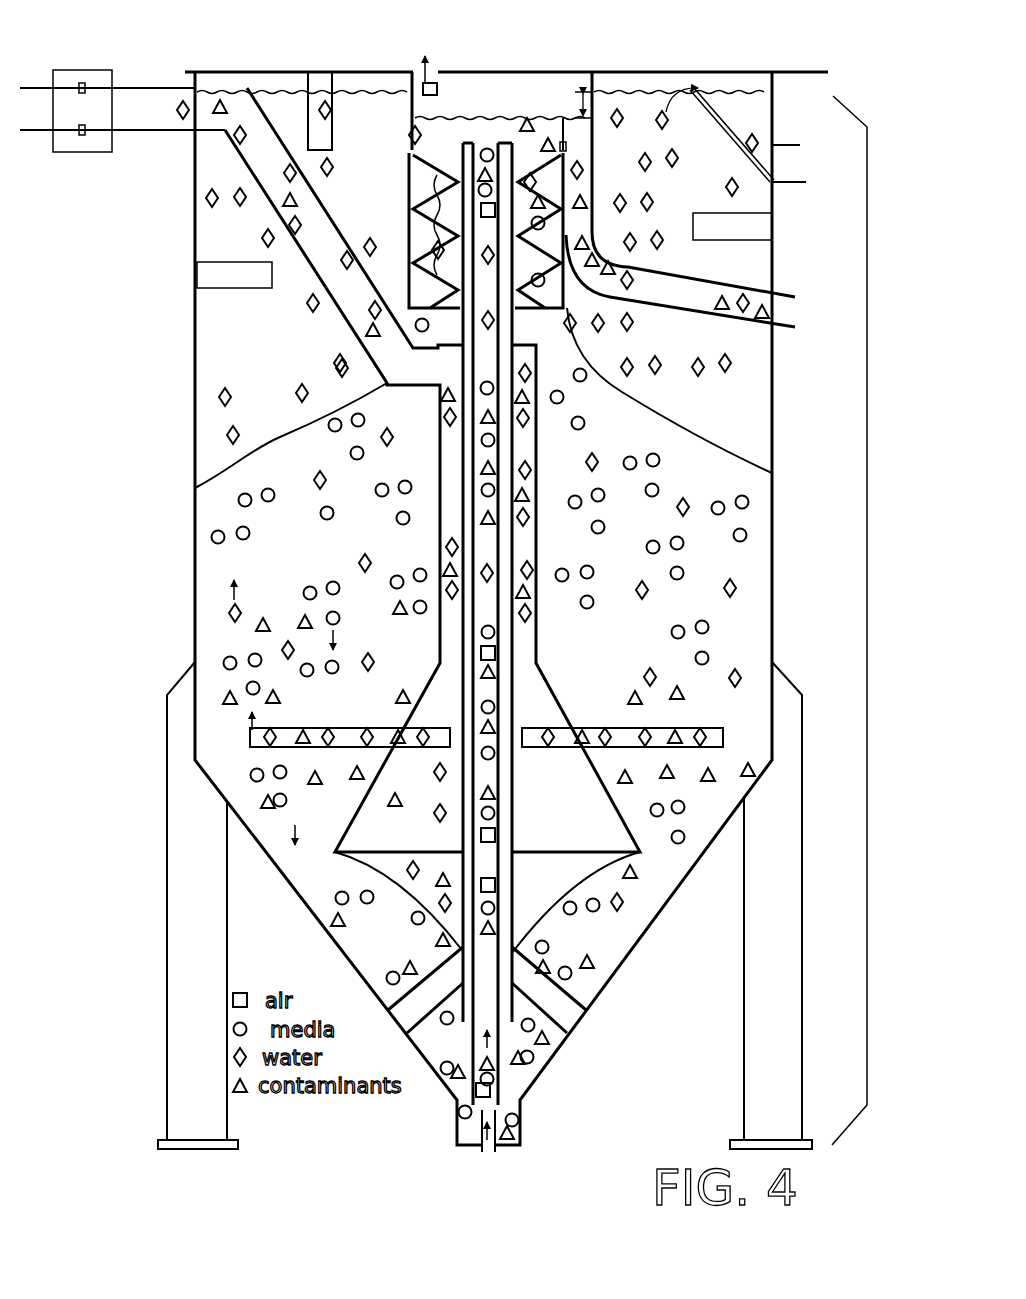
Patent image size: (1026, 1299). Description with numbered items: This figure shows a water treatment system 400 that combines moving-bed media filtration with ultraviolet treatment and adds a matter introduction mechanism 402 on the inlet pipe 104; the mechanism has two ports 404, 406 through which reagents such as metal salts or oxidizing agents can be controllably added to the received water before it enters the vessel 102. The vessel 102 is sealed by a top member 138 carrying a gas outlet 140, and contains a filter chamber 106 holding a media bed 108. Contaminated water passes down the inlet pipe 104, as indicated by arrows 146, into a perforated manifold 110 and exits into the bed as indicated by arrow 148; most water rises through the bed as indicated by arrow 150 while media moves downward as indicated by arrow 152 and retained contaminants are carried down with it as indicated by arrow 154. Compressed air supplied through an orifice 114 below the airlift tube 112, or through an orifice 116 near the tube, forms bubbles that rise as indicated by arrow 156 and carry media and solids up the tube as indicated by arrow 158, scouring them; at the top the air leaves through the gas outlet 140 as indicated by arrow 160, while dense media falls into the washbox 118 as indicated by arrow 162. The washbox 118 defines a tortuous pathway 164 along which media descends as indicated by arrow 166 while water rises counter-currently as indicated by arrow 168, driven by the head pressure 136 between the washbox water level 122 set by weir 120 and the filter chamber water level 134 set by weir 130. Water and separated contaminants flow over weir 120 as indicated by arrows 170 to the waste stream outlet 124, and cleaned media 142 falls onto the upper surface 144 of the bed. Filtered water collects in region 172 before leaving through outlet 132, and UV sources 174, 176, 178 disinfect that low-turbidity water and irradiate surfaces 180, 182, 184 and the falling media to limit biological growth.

The vessel 102 is at (361, 70).
The inlet pipe 104 is at (170, 88).
The filter chamber 106 is at (868, 608).
The media bed 108 is at (690, 421).
The perforated manifold 110 is at (333, 728).
The airlift tube 112 is at (512, 872).
The orifice 114 is at (498, 1152).
The orifice 116 is at (500, 1109).
The washbox 118 is at (404, 162).
The weir 120 is at (568, 144).
The water level 122 is at (495, 117).
The waste stream outlet 124 is at (688, 299).
The weir 130 is at (724, 136).
The outlet 132 is at (806, 175).
The water level 134 is at (642, 88).
The head pressure 136 is at (579, 100).
The top member 138 is at (721, 72).
The gas outlet 140 is at (412, 72).
The cleaned media 142 is at (437, 278).
The upper surface 144 is at (294, 434).
The arrows 146 is at (458, 376).
The arrow 148 is at (252, 726).
The arrow 150 is at (234, 582).
The arrow 152 is at (333, 620).
The arrow 154 is at (284, 801).
The arrow 156 is at (480, 1142).
The arrow 158 is at (484, 1046).
The arrow 160 is at (432, 70).
The arrow 162 is at (455, 130).
The tortuous pathway 164 is at (452, 283).
The arrow 166 is at (544, 274).
The arrow 168 is at (545, 298).
The arrows 170 is at (567, 120).
The region 172 is at (300, 357).
The UV source 174 is at (253, 285).
The UV source 176 is at (750, 237).
The UV source 178 is at (319, 72).
The surface 180 is at (196, 326).
The surface 182 is at (771, 271).
The surface 184 is at (331, 212).
The water treatment system 400 is at (88, 42).
The matter introduction mechanism 402 is at (112, 152).
The port 404 is at (82, 83).
The port 406 is at (82, 135).